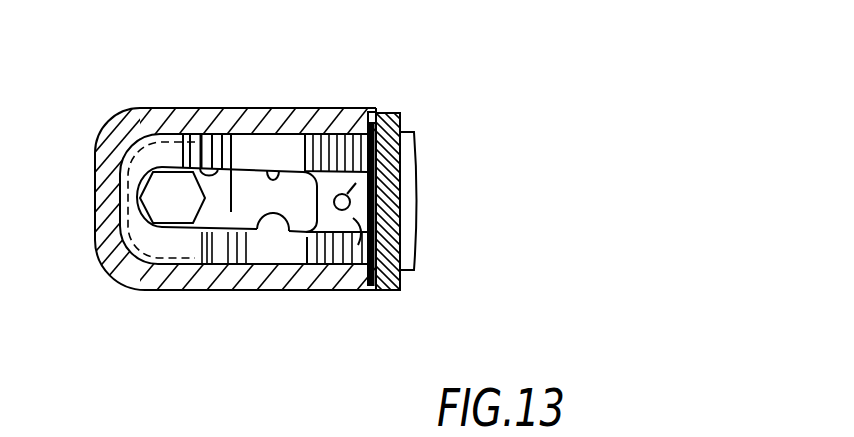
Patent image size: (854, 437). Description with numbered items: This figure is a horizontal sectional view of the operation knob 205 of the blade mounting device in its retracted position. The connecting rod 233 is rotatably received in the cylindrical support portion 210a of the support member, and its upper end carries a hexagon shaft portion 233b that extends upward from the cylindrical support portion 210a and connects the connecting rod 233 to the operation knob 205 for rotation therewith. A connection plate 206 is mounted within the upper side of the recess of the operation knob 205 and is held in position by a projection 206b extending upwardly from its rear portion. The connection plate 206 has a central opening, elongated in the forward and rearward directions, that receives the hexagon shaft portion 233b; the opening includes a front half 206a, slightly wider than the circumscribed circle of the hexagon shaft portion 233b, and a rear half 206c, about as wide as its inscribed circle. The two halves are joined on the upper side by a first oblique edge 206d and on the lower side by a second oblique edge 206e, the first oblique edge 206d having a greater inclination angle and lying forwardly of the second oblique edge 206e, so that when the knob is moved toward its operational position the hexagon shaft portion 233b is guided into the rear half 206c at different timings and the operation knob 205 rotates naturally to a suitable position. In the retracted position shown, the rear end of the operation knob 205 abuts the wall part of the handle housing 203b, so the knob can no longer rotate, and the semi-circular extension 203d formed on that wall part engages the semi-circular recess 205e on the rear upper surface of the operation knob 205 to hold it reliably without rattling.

The operation knob 205 is at (183, 108).
The connection plate 206 is at (262, 150).
The front half 206a is at (222, 150).
The projection 206b is at (342, 210).
The rear half 206c is at (285, 170).
The first oblique edge 206d is at (245, 140).
The second oblique edge 206e is at (283, 207).
The wall part of the handle housing 203b is at (403, 183).
The semi-circular recess 205e is at (495, 201).
The semi-circular extension 203d is at (400, 255).
The hexagon shaft portion 233b is at (166, 251).
The connecting rod 233 is at (166, 210).
The cylindrical support portion 210a is at (231, 212).